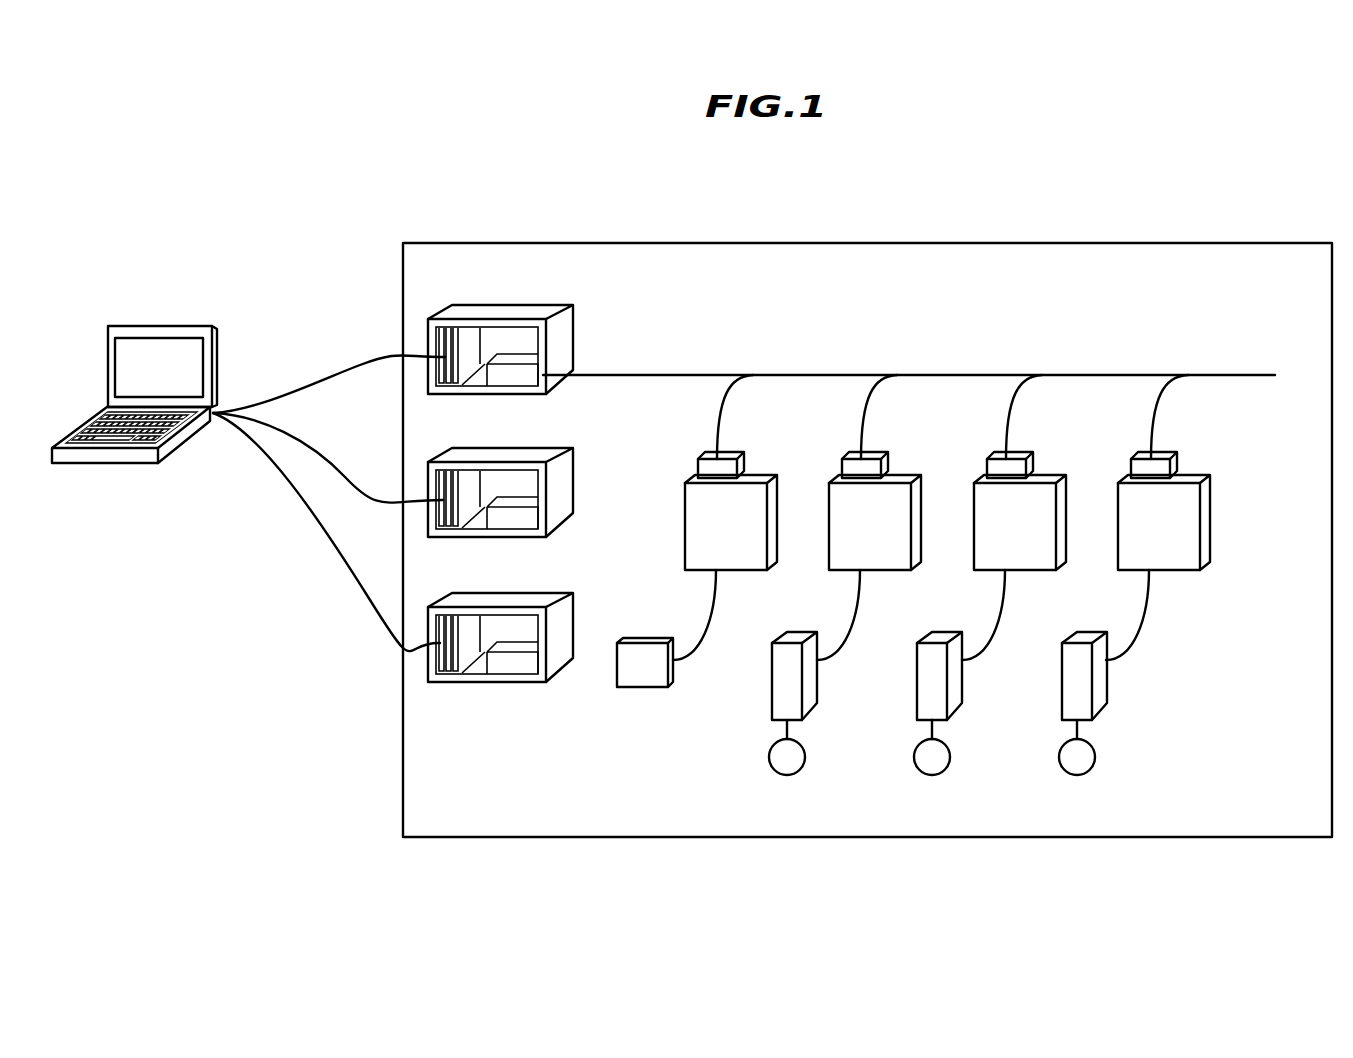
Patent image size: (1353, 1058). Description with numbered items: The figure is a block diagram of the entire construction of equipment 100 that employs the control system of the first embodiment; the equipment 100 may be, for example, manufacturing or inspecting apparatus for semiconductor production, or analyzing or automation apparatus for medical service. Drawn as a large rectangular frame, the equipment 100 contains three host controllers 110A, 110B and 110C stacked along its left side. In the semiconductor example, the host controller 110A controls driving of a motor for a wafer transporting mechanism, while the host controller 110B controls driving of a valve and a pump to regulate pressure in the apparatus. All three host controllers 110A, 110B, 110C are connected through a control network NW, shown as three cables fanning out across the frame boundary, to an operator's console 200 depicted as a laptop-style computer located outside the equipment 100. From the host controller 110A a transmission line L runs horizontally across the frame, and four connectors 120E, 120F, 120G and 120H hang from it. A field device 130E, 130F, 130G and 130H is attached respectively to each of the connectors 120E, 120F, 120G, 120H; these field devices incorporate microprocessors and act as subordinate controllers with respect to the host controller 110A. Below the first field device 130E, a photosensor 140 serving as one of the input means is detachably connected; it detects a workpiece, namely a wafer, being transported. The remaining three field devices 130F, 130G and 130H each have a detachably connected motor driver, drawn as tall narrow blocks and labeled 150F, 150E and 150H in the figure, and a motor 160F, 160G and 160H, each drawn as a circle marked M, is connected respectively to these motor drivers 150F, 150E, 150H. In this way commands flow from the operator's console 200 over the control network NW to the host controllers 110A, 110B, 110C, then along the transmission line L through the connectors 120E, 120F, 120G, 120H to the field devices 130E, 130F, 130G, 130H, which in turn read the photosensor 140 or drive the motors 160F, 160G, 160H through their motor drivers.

The equipment 100 is at (1190, 243).
The operator's console 200 is at (166, 326).
The control network NW is at (348, 352).
The host controller 110A is at (497, 305).
The host controller 110B is at (497, 448).
The host controller 110C is at (497, 593).
The transmission line L is at (663, 372).
The connector 120E is at (745, 463).
The connector 120F is at (889, 463).
The connector 120G is at (1034, 463).
The connector 120H is at (1178, 463).
The field device 130E is at (777, 542).
The field device 130F is at (921, 542).
The field device 130G is at (1066, 542).
The field device 130H is at (1210, 542).
The photosensor 140 is at (643, 688).
The motor driver 150F is at (813, 703).
The inverter (motor driver) 150E is at (958, 703).
The motor driver 150H is at (1103, 703).
The motor 160F is at (785, 777).
The motor 160G is at (930, 777).
The motor 160H is at (1073, 777).